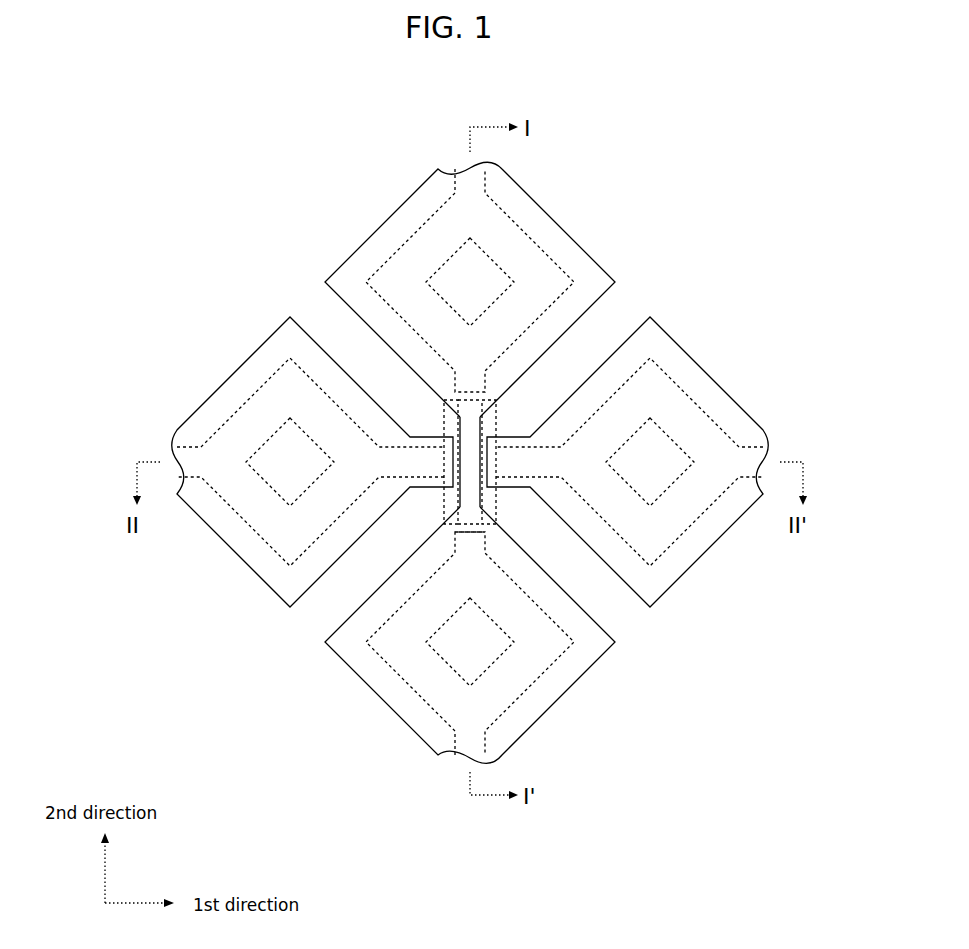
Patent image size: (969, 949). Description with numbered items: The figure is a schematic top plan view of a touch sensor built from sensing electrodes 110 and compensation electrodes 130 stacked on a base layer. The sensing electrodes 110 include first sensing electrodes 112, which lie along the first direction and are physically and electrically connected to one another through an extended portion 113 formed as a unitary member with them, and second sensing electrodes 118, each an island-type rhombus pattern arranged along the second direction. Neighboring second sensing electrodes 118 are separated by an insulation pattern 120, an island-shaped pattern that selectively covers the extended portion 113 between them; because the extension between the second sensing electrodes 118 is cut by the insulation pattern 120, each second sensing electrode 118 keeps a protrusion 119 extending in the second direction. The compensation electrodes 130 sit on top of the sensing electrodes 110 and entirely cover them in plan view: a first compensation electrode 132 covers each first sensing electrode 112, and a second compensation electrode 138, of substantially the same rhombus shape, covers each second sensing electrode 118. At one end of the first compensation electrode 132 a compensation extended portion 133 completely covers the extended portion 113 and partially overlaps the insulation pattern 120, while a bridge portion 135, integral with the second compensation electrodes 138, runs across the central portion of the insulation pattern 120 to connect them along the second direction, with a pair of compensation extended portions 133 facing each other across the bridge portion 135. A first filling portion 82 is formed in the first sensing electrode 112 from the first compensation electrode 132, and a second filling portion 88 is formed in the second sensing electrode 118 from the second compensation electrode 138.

The first filling portion 82 is at (277, 447).
The second filling portion 88 is at (490, 278).
The sensing electrodes 110 is at (515, 462).
The first sensing electrode 112 is at (688, 524).
The second sensing electrode 118 is at (532, 667).
The extended portion 113 is at (432, 457).
The protrusion 119 is at (488, 537).
The insulation pattern 120 is at (446, 497).
The compensation electrodes 130 is at (420, 462).
The first compensation electrode 132 is at (228, 537).
The second compensation electrode 138 is at (406, 711).
The compensation extended portion 133 is at (506, 450).
The bridge portion 135 is at (493, 503).